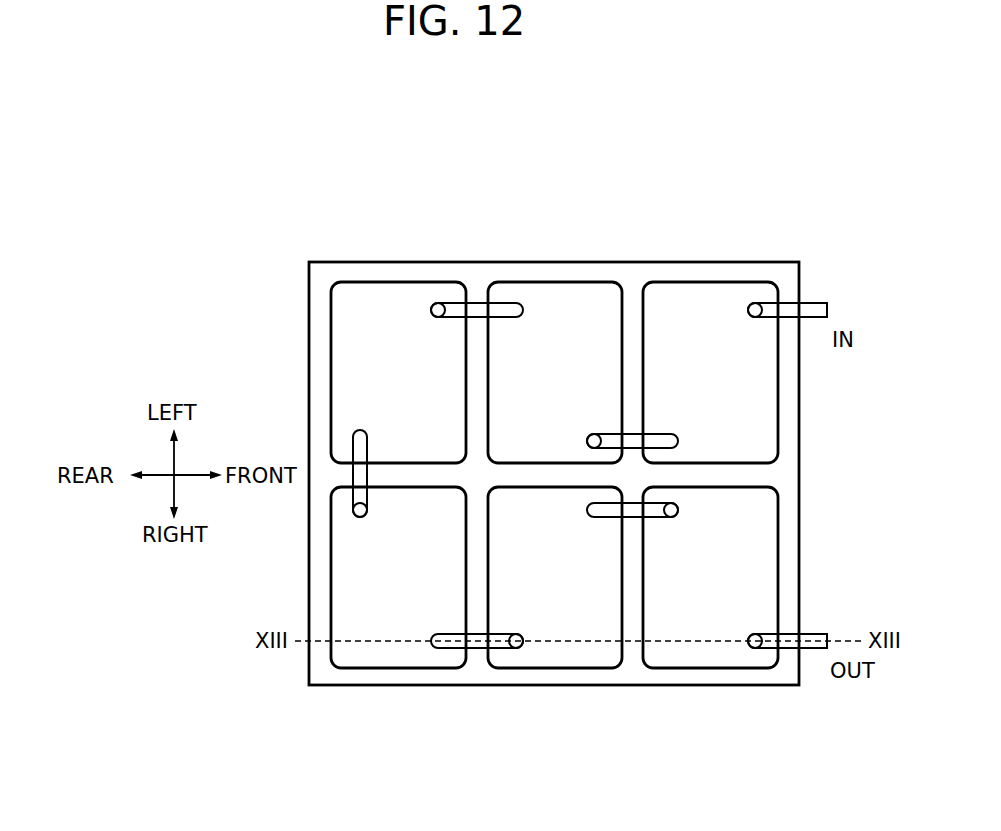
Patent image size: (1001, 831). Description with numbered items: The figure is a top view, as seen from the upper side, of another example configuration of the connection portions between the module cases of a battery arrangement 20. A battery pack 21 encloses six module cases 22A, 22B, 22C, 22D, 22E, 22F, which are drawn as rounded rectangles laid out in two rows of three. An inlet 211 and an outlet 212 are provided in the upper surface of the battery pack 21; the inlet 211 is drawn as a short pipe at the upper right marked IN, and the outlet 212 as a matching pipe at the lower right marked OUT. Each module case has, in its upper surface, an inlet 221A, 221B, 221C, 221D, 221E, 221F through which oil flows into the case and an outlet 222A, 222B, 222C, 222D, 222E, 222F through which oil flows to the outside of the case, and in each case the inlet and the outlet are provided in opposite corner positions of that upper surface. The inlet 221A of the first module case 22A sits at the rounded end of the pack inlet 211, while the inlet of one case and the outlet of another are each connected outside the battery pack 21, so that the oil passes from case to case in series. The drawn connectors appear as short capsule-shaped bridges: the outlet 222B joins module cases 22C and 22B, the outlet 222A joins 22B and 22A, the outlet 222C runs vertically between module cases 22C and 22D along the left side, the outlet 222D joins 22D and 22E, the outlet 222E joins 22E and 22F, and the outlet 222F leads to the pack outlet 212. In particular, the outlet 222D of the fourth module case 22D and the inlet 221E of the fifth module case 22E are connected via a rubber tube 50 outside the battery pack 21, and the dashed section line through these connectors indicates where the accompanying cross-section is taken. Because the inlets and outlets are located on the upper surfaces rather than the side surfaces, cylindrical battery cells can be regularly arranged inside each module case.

The battery module 20 is at (547, 443).
The battery pack 21 is at (810, 473).
The inlet 211 is at (820, 302).
The outlet 212 is at (820, 634).
The module case 22A is at (718, 273).
The module case 22B is at (556, 273).
The module case 22C is at (370, 273).
The fourth module case 22D is at (385, 677).
The fifth module case 22E is at (556, 677).
The module case 22F is at (734, 677).
The inlet 221A is at (757, 318).
The inlet 221B is at (594, 427).
The inlet 221C is at (437, 296).
The inlet 221D is at (357, 522).
The inlet 221E is at (518, 650).
The inlet 221F is at (672, 520).
The outlet 222A is at (671, 427).
The outlet 222B is at (521, 296).
The outlet 222C is at (358, 429).
The outlet 222D is at (442, 650).
The outlet 222E is at (596, 520).
The outlet 222F is at (756, 651).
The rubber tube 50 is at (478, 650).